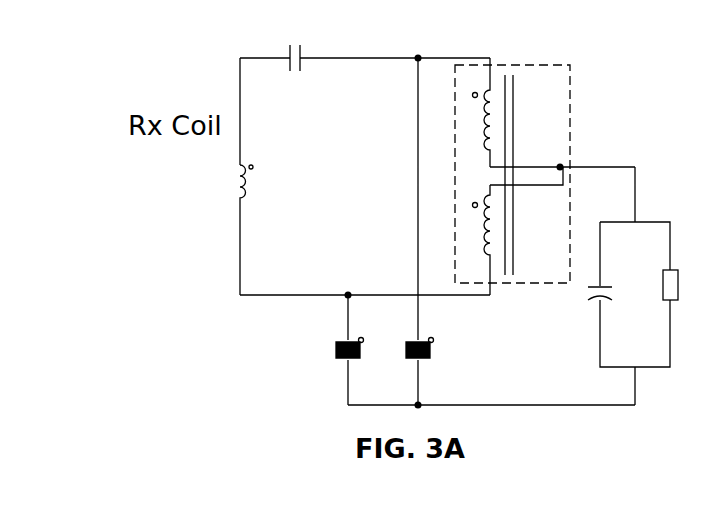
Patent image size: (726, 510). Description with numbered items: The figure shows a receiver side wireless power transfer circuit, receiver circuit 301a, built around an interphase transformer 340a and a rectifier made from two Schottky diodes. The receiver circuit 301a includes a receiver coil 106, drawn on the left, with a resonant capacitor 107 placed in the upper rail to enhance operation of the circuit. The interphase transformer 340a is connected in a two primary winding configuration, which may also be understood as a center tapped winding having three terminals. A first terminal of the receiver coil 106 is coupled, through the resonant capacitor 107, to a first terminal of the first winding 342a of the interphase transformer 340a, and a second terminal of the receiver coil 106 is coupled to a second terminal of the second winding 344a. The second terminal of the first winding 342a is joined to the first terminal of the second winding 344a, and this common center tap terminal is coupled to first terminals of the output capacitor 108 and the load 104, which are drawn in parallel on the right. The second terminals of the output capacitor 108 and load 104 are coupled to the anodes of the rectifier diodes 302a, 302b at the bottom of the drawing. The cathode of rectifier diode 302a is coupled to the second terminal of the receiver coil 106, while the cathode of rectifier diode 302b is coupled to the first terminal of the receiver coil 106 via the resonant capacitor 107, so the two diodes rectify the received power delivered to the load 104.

The resonant capacitor 107 is at (290, 74).
The receiver coil 106 is at (243, 190).
The interphase transformer 340a is at (471, 164).
The first winding 342a is at (490, 150).
The second winding 344a is at (487, 256).
The receiver circuit 301a is at (598, 104).
The load 104 is at (682, 270).
The output capacitor 108 is at (590, 302).
The rectifier diode 302a is at (338, 343).
The rectifier diode 302b is at (432, 358).